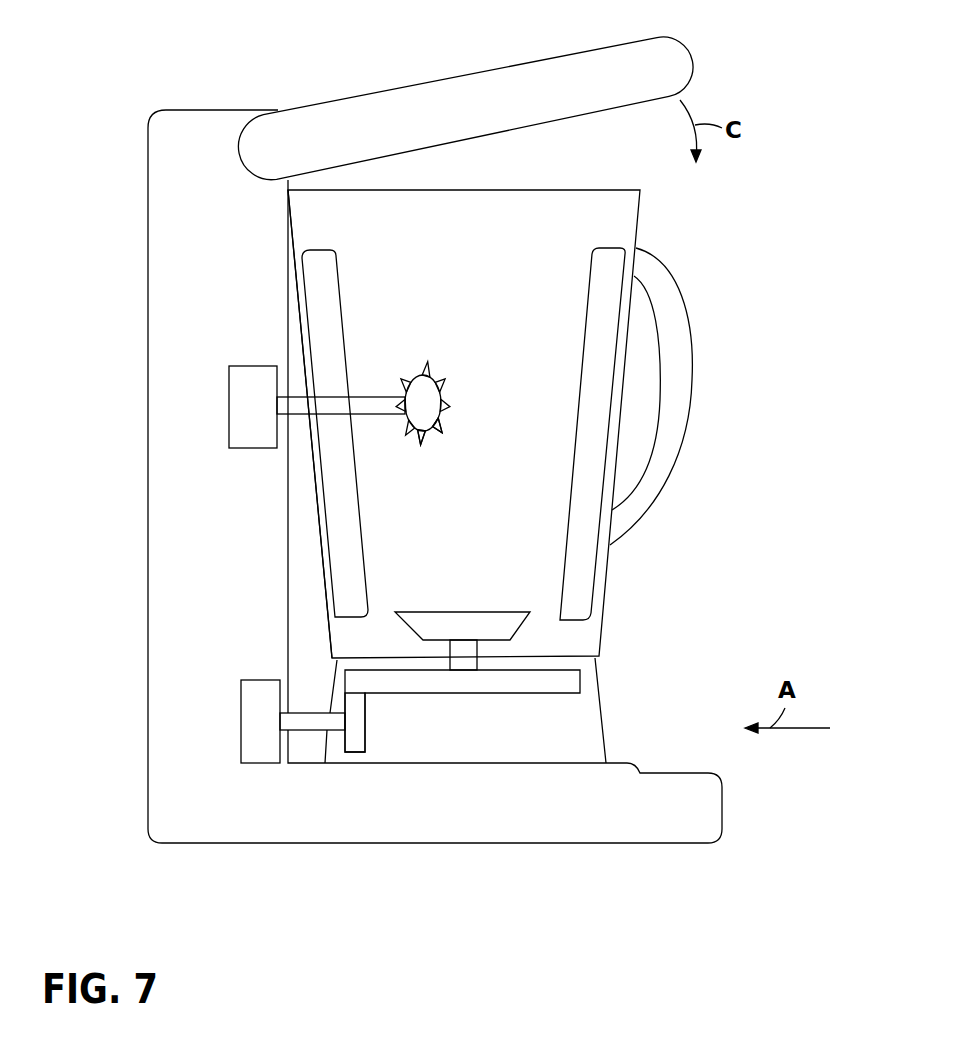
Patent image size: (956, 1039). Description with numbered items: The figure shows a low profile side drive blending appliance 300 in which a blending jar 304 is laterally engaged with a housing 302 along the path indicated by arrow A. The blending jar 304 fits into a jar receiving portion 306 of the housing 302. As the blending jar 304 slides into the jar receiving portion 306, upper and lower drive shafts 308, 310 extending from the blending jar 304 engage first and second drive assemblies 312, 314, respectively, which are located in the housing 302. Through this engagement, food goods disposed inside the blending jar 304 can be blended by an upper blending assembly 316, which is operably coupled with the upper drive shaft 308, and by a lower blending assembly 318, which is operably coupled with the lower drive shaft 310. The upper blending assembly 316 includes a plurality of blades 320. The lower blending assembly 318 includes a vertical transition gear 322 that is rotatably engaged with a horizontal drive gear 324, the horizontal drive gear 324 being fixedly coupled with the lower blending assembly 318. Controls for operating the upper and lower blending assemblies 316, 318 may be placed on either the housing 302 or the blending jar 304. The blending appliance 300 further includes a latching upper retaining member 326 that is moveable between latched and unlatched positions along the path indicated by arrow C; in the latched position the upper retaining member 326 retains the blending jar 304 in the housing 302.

The blending appliance 300 is at (748, 95).
The housing 302 is at (178, 505).
The blending jar 304 is at (620, 220).
The jar receiving portion 306 is at (305, 592).
The upper drive shaft 308 is at (336, 392).
The lower drive shaft 310 is at (315, 722).
The first drive assembly 312 is at (240, 418).
The second drive assembly 314 is at (255, 705).
The upper blending assembly 316 is at (433, 396).
The lower blending assembly 318 is at (510, 612).
The blades 320 is at (449, 428).
The vertical transition gear 322 is at (355, 745).
The horizontal drive gear 324 is at (565, 681).
The upper retaining member 326 is at (477, 85).